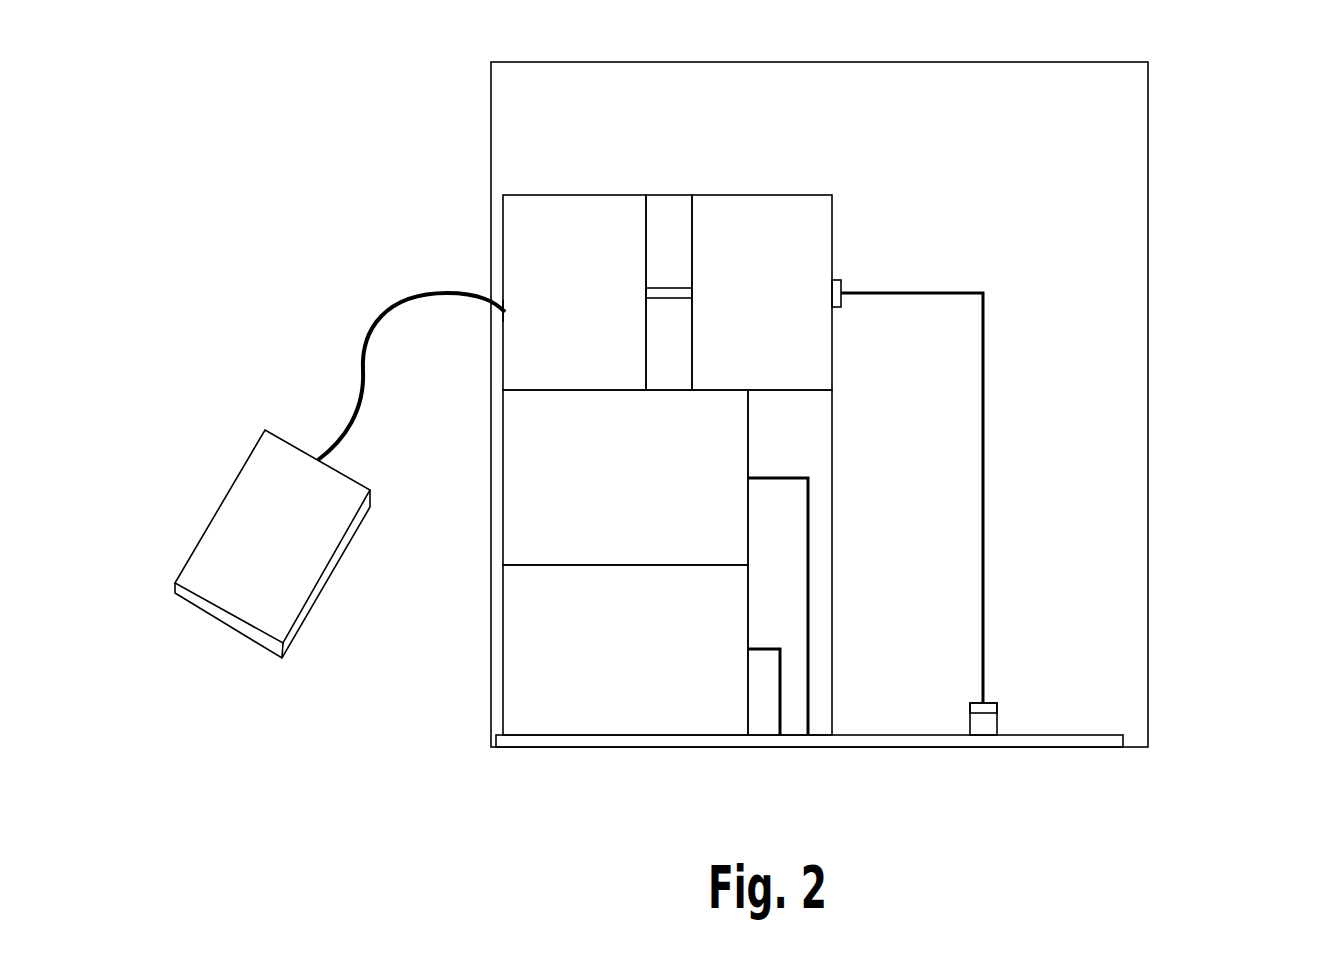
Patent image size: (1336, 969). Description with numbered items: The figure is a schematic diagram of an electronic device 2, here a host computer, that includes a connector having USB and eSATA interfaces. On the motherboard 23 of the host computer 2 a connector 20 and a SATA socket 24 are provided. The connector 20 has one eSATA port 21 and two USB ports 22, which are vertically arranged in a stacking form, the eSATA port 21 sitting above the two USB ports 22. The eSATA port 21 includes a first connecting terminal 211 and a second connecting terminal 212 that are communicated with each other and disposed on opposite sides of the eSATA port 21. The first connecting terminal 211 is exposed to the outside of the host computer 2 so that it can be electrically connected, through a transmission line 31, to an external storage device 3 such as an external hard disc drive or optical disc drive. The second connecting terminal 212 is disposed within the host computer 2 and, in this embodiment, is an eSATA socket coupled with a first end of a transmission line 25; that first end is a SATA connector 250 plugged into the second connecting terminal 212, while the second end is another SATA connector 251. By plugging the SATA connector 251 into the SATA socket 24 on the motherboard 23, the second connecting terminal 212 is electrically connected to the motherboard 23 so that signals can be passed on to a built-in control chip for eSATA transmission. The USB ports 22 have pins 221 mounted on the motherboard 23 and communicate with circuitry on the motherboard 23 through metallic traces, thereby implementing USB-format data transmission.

The electronic device 2 is at (1300, 73).
The connector 20 is at (696, 477).
The eSATA port 21 is at (503, 240).
The first connecting terminal 211 is at (515, 277).
The second connecting terminal 212 is at (755, 215).
The USB ports 22 is at (503, 490).
The pins 221 is at (805, 712).
The motherboard 23 is at (849, 740).
The SATA socket 24 is at (990, 730).
The transmission line 25 is at (987, 410).
The SATA connector 250 is at (841, 283).
The SATA connector 251 is at (990, 710).
The external storage device 3 is at (252, 510).
The transmission line 31 is at (362, 380).